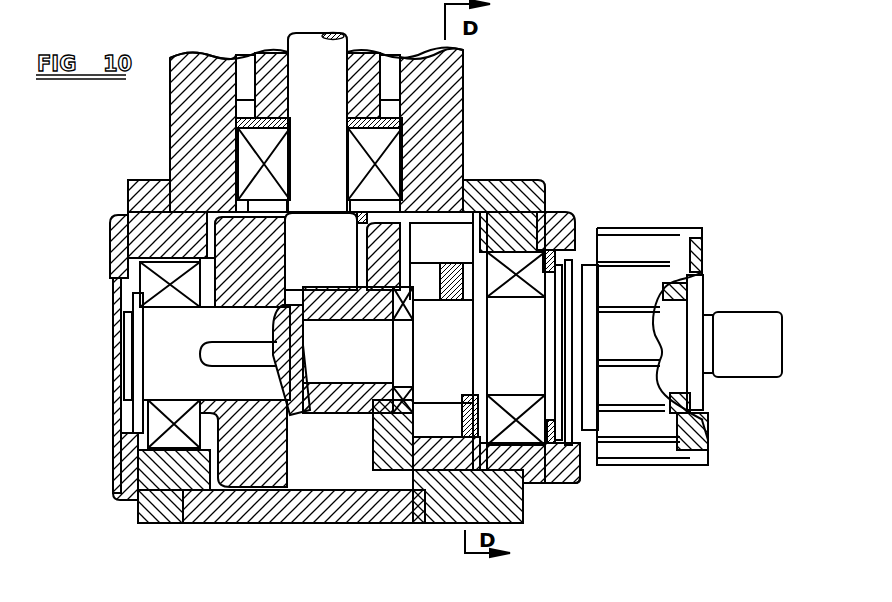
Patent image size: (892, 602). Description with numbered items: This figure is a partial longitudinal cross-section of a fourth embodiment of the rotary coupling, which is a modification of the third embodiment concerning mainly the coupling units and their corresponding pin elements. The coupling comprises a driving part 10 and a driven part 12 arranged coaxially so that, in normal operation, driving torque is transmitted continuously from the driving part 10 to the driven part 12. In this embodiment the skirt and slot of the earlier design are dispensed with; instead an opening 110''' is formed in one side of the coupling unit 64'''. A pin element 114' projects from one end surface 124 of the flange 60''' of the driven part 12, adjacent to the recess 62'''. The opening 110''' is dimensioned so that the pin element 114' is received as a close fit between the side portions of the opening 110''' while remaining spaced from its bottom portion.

The driving part 10 is at (287, 290).
The pin element 114' is at (474, 219).
The driven part 12 is at (462, 335).
The end surface 124 is at (577, 470).
The flange 60''' is at (517, 496).
The recess 62''' is at (304, 496).
The coupling unit 64''' is at (445, 505).
The opening 110''' is at (359, 479).